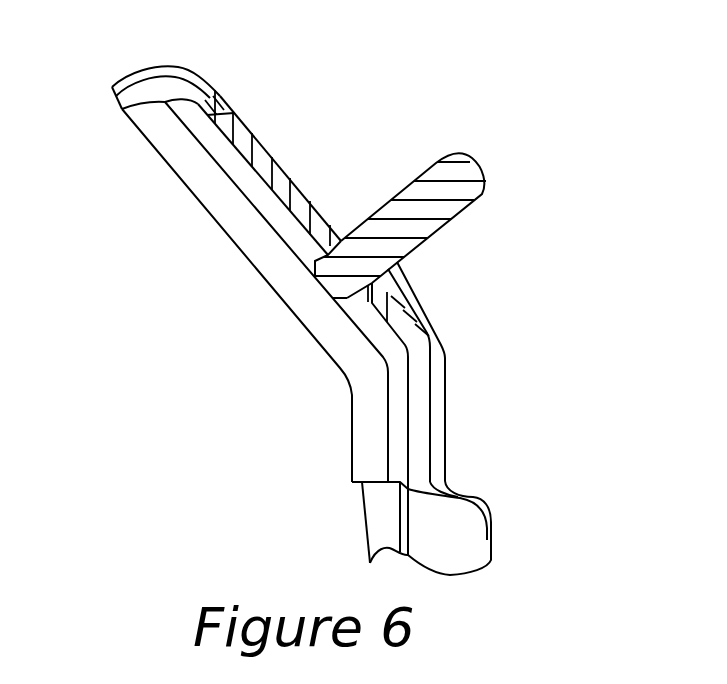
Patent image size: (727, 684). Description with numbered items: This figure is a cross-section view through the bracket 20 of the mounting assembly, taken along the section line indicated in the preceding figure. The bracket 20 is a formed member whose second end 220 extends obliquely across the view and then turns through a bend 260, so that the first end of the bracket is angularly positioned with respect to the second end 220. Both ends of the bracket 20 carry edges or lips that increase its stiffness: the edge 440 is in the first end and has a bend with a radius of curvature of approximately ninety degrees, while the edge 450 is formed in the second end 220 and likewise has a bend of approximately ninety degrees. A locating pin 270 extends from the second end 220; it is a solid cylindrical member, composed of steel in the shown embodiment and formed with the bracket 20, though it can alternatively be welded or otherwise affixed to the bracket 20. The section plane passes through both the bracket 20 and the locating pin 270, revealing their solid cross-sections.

The bracket 20 is at (552, 246).
The second end 220 is at (232, 222).
The bend 260 is at (347, 388).
The locating pin 270 is at (455, 167).
The edge 440 is at (153, 95).
The edge 450 is at (460, 521).